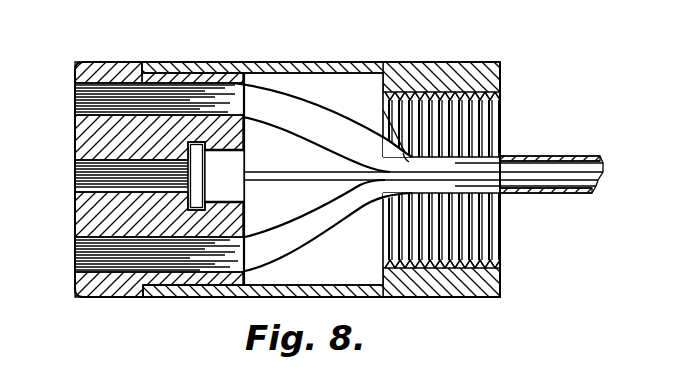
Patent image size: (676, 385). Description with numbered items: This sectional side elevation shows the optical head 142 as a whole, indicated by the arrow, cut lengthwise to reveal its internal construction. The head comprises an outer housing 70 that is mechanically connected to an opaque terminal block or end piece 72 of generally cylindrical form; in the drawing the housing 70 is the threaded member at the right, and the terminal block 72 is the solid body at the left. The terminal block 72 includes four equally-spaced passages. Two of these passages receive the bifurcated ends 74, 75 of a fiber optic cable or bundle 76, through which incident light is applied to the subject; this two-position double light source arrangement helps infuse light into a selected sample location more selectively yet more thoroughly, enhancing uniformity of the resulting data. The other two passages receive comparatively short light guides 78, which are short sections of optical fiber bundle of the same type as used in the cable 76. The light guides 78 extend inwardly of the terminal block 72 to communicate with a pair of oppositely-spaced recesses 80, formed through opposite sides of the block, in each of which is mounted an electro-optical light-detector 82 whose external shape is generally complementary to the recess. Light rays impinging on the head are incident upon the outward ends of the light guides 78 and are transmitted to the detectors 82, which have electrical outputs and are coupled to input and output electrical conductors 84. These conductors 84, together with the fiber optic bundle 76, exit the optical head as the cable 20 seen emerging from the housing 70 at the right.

The connector assembly 142 is at (279, 24).
The terminal block 72 is at (80, 66).
The outer housing 70 is at (333, 62).
The bifurcated end of fiber optic cable 74 is at (75, 100).
The light guide 78 is at (75, 172).
The bifurcated end of fiber optic cable 75 is at (75, 252).
The fiber optic cable 76 is at (409, 130).
The cable 20 is at (548, 155).
The recess 80 is at (245, 142).
The electro-optical light-detector 82 is at (233, 190).
The electrical conductors 84 is at (332, 172).